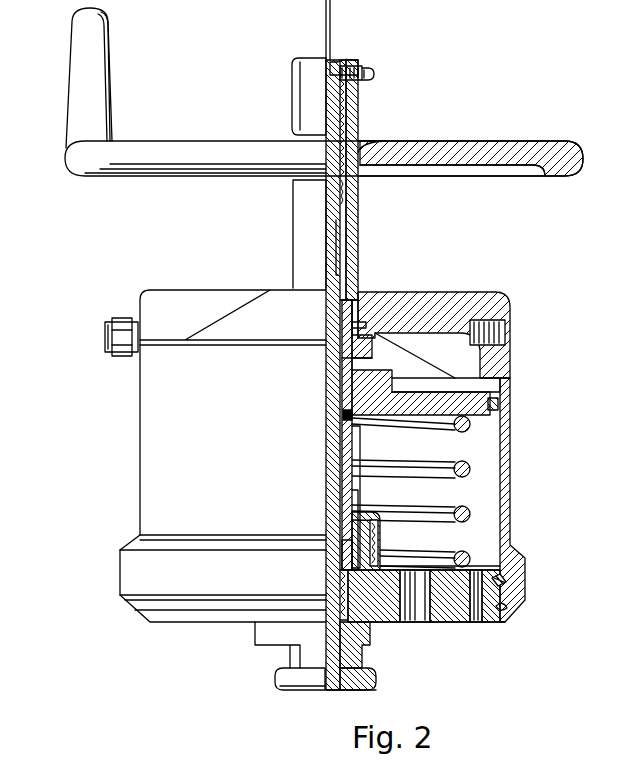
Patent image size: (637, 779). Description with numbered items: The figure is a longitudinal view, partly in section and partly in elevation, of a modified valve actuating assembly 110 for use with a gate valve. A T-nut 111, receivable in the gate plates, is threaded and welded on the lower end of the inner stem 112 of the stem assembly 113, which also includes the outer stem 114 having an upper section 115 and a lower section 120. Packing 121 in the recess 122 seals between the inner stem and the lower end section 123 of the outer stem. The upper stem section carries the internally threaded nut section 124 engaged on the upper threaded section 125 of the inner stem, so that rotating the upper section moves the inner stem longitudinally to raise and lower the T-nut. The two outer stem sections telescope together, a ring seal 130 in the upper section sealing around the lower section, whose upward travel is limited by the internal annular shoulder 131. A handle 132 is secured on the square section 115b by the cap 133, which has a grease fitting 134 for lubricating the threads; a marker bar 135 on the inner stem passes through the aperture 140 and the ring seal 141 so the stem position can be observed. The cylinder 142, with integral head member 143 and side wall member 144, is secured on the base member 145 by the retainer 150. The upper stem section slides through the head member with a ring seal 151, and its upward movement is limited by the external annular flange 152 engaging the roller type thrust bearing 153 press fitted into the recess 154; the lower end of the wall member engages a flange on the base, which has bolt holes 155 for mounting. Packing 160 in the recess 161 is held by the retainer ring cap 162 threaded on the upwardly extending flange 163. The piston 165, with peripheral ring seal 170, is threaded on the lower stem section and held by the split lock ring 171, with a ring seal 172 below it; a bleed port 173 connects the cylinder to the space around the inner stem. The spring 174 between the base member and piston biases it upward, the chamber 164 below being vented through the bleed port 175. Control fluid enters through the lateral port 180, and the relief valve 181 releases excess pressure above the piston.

The valve actuating assembly 110 is at (124, 492).
The T-nut 111 is at (350, 692).
The inner stem 112 is at (320, 660).
The stem assembly 113 is at (285, 268).
The outer stem 114 is at (362, 444).
The upper section of outer stem 115 is at (352, 232).
The square section 115b is at (408, 133).
The lower section of outer stem 120 is at (354, 490).
The packing 121 is at (340, 600).
The recess 122 is at (336, 590).
The lower end section of outer stem 123 is at (358, 626).
The internally threaded nut section 124 is at (352, 210).
The upper threaded section 125 is at (352, 198).
The ring seal 130 is at (340, 352).
The internal annular shoulder 131 is at (336, 240).
The handle 132 is at (72, 156).
The cap 133 is at (296, 79).
The grease fitting 134 is at (372, 80).
The marker bar 135 is at (326, 30).
The aperture 140 is at (336, 62).
The ring seal 141 is at (348, 66).
The cylinder 142 is at (520, 305).
The head member 143 is at (460, 300).
The side wall member 144 is at (508, 446).
The base member 145 is at (458, 620).
The retainer 150 is at (508, 581).
The ring seal 151 is at (368, 302).
The external annular flange 152 is at (374, 352).
The roller type thrust bearing 153 is at (425, 300).
The recess / external annular flange 154 is at (352, 325).
The bolt holes 155 is at (425, 620).
The packing 160 is at (348, 524).
The recess 161 is at (340, 550).
The retainer ring cap 162 is at (350, 500).
The upwardly extending flange 163 is at (378, 545).
The chamber 164 is at (505, 485).
The piston 165 is at (478, 420).
The peripheral ring seal 170 is at (500, 402).
The split lock ring 171 is at (340, 368).
The ring seal 172 is at (340, 385).
The bleed port 173 is at (342, 416).
The spring 174 is at (470, 518).
The bleed port 175 is at (498, 622).
The internally threaded lateral port 180 is at (512, 332).
The relief valve 181 is at (112, 336).